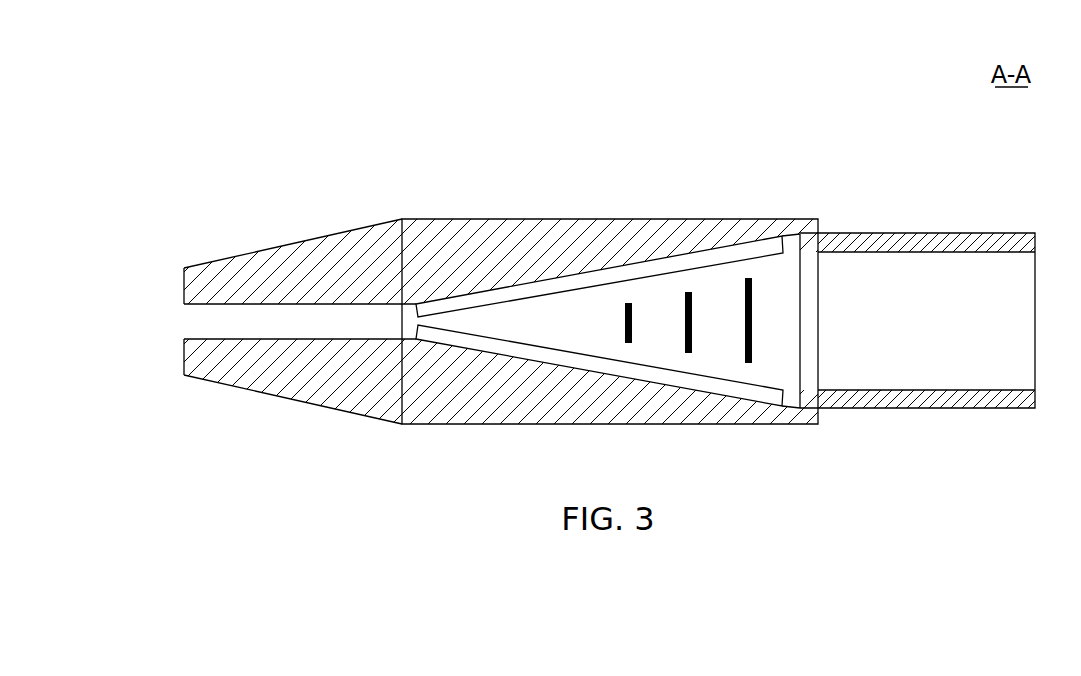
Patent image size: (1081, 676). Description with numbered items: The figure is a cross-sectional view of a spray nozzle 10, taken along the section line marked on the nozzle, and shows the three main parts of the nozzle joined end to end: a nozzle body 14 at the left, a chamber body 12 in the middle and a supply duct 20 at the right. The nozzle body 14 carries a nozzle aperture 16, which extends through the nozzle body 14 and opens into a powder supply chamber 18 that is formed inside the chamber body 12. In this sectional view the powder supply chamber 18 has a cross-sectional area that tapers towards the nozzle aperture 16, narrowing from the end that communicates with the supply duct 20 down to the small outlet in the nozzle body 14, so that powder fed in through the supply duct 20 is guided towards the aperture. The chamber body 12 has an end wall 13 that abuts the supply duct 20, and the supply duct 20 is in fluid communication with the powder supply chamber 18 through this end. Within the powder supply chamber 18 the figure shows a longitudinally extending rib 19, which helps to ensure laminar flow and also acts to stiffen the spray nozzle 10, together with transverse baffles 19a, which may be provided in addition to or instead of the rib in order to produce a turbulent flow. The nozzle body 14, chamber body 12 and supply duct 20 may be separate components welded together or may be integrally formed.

The spray nozzle 10 is at (838, 130).
The chamber body 12 is at (472, 219).
The end wall 13 is at (810, 402).
The nozzle body 14 is at (263, 250).
The nozzle aperture 16 is at (183, 323).
The powder supply chamber 18 is at (580, 317).
The longitudinally extending rib 19 is at (527, 352).
The transverse baffle 19a is at (753, 287).
The supply duct 20 is at (917, 242).